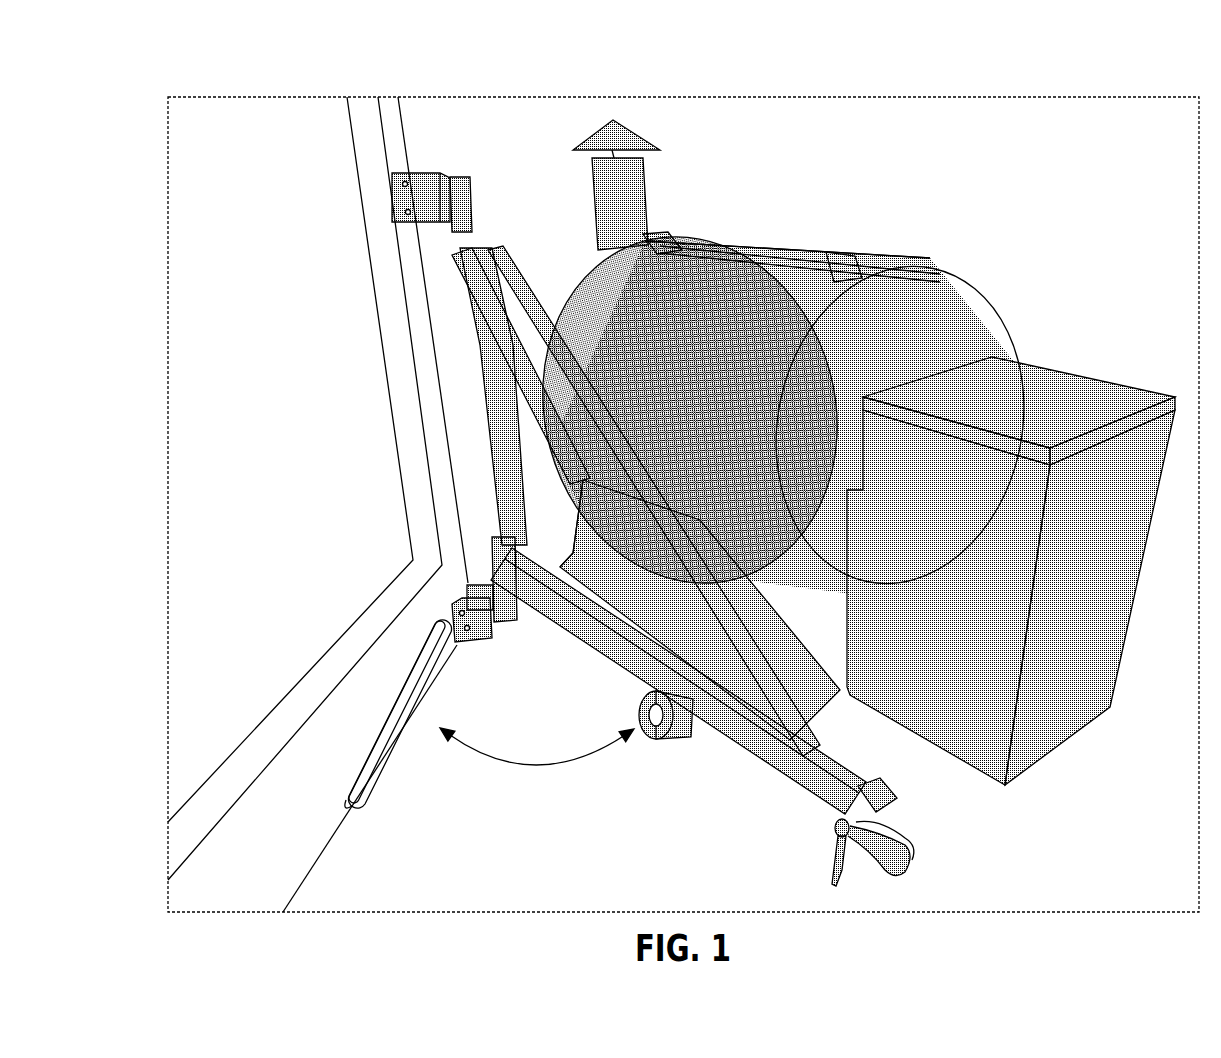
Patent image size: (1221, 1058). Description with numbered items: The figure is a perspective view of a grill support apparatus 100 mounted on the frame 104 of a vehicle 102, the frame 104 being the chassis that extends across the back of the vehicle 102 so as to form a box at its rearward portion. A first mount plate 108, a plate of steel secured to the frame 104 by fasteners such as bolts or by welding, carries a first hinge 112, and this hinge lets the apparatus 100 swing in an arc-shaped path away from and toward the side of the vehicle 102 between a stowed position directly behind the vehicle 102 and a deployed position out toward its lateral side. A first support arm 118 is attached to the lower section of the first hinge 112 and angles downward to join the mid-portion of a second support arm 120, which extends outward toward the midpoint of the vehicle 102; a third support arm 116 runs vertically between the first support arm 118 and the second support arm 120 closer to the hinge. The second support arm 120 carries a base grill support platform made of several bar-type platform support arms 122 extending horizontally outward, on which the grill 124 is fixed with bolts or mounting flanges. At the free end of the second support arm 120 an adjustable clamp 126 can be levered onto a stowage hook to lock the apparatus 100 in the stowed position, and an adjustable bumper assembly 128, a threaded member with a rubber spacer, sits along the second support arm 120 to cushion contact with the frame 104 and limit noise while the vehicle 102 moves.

The grill support apparatus 100 is at (455, 600).
The vehicle 102 is at (274, 482).
The frame 104 is at (320, 856).
The first mount plate 108 is at (418, 178).
The first hinge 112 is at (473, 233).
The third support arm 116 is at (480, 347).
The first support arm 118 is at (496, 263).
The second support arm 120 is at (554, 625).
The platform support arms 122 is at (560, 566).
The grill 124 is at (782, 250).
The adjustable clamp 126 is at (914, 847).
The adjustable bumper assembly 128 is at (660, 745).